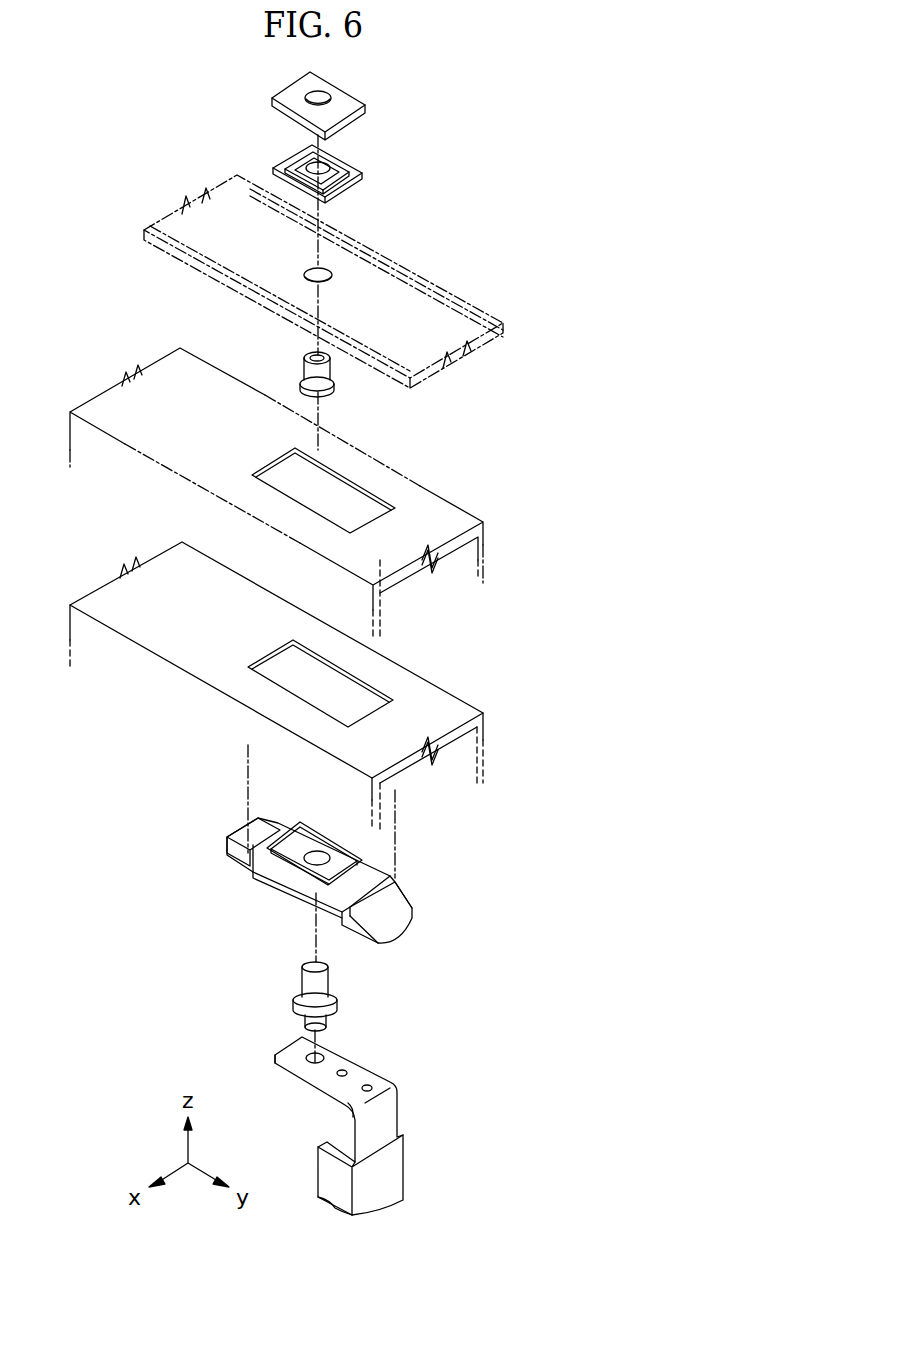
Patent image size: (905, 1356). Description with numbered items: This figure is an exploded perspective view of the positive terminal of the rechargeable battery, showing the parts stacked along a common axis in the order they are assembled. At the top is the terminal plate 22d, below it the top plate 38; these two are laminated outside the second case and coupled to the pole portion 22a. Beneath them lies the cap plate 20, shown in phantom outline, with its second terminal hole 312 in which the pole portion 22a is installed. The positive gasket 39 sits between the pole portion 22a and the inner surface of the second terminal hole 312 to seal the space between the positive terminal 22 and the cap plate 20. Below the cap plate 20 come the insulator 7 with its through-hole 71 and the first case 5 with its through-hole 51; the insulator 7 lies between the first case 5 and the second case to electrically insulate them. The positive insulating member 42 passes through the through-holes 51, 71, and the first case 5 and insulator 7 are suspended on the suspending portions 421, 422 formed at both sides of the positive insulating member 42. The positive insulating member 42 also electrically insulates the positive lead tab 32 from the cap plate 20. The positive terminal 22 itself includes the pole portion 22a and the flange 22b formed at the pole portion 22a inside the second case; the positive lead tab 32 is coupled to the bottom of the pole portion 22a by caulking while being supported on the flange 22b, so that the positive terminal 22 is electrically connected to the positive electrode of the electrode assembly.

The terminal plate 22d is at (353, 103).
The top plate 38 is at (358, 175).
The second terminal hole 312 is at (320, 272).
The cap plate 20 is at (292, 281).
The positive gasket 39 is at (333, 380).
The through-hole 71 is at (357, 490).
The insulator 7 is at (301, 494).
The first case 5 is at (261, 683).
The through-hole 51 is at (337, 672).
The suspending portion 421 is at (232, 840).
The positive insulating member 42 is at (316, 880).
The suspending portion 422 is at (402, 900).
The positive terminal 22 is at (315, 997).
The pole portion 22a is at (320, 982).
The flange 22b is at (330, 1003).
The positive lead tab 32 is at (385, 1113).